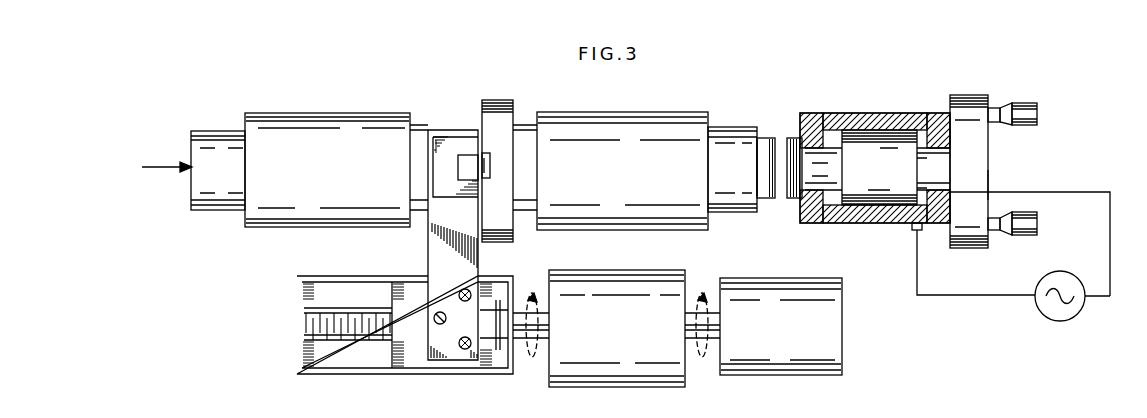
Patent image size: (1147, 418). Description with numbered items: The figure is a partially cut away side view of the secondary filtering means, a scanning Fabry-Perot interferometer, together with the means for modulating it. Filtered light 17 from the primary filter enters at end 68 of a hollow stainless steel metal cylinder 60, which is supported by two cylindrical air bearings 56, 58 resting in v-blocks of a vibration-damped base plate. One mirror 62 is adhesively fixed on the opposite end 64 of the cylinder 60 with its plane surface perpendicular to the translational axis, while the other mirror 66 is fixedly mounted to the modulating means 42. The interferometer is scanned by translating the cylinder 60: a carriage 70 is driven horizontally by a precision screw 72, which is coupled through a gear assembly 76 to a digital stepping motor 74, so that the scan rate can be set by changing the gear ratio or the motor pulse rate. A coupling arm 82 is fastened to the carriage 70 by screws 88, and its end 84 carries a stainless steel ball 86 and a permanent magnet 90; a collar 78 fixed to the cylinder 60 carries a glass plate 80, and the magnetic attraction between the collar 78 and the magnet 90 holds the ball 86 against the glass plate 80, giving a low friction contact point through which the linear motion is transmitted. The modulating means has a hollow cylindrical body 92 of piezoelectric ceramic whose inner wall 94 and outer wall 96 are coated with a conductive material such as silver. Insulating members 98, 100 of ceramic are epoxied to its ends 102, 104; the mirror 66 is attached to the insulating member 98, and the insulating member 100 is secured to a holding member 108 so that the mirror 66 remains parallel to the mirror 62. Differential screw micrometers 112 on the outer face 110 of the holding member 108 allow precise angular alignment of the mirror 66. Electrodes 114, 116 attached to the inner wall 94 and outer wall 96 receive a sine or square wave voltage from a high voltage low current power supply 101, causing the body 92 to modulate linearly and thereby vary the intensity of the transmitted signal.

The filtered light 17 is at (160, 165).
The modulating means 42 is at (825, 223).
The cylindrical air bearing 56 is at (650, 183).
The cylindrical air bearing 58 is at (320, 130).
The hollow metal cylinder 60 is at (745, 183).
The mirror 62 is at (760, 138).
The end of cylinder 64 is at (760, 138).
The mirror 66 is at (797, 196).
The end of cylinder 68 is at (191, 186).
The carriage 70 is at (415, 293).
The precision screw 72 is at (330, 322).
The digital stepping motor 74 is at (800, 340).
The gear assembly 76 is at (628, 340).
The collar 78 is at (495, 100).
The glass plate 80 is at (491, 172).
The coupling arm 82 is at (480, 264).
The end of coupling arm 84 is at (482, 112).
The ball 86 is at (488, 160).
The screws 88 is at (461, 291).
The permanent magnet 90 is at (437, 172).
The hollow cylindrical body 92 is at (858, 220).
The inner wall 94 is at (865, 133).
The outer wall 96 is at (885, 113).
The insulating member 98 is at (808, 112).
The insulating member 100 is at (945, 112).
The power supply 101 is at (1045, 315).
The end of cylindrical body 102 is at (815, 113).
The end of cylindrical body 104 is at (920, 113).
The holding member 108 is at (982, 176).
The outer face of holding member 110 is at (990, 143).
The differential screw micrometers 112 is at (1037, 105).
The electrode 114 is at (888, 169).
The electrode 116 is at (915, 232).